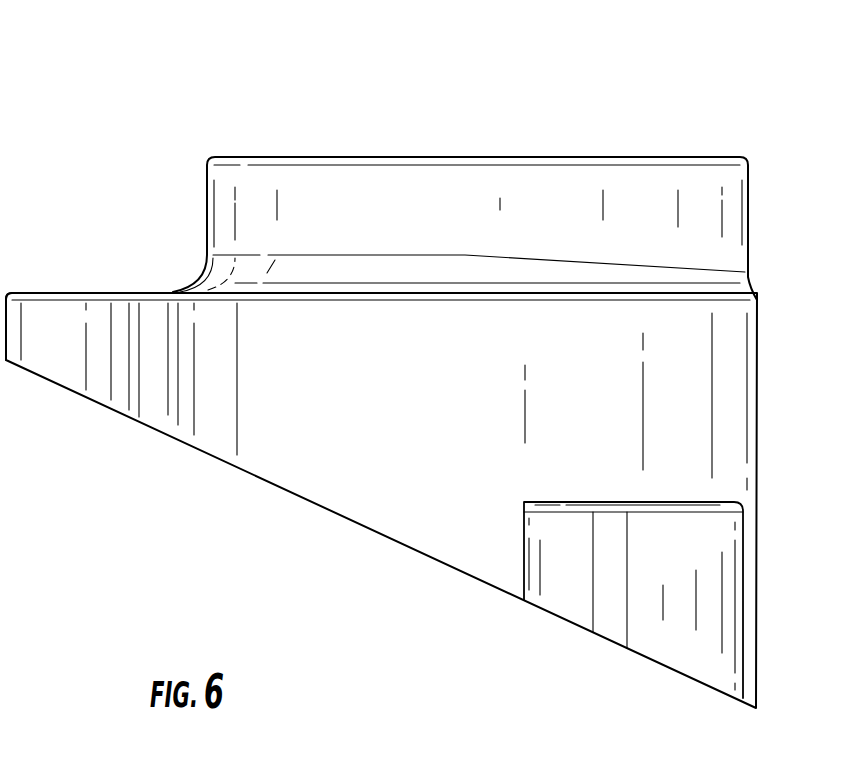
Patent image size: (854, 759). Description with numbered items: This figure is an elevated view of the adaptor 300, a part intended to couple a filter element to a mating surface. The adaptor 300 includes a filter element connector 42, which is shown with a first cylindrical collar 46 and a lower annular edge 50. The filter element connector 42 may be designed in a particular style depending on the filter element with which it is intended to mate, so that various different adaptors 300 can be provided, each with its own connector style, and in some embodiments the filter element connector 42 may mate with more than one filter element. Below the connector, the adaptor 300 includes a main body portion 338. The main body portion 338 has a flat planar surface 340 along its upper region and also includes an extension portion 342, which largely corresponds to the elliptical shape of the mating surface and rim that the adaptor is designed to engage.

The filter element connector 42 is at (693, 84).
The first cylindrical collar 46 is at (710, 230).
The lower annular edge 50 is at (422, 160).
The adaptor 300 is at (173, 498).
The main body portion 338 is at (753, 443).
The flat planar surface 340 is at (135, 294).
The extension portion 342 is at (82, 294).